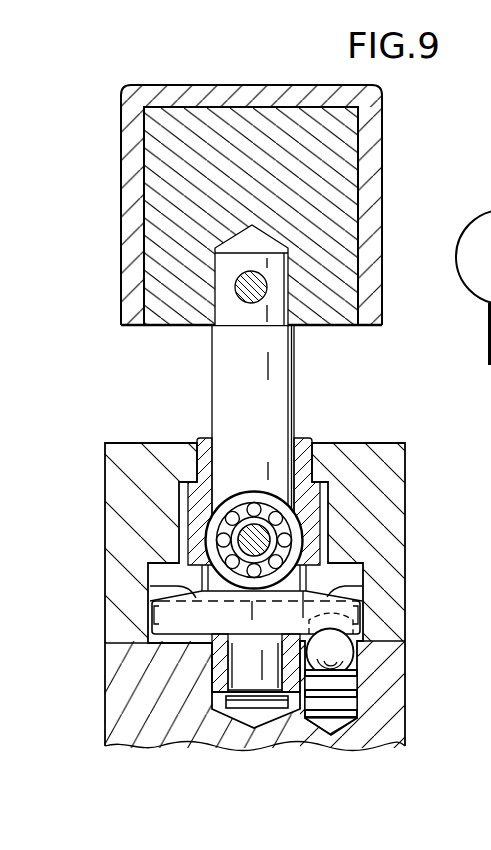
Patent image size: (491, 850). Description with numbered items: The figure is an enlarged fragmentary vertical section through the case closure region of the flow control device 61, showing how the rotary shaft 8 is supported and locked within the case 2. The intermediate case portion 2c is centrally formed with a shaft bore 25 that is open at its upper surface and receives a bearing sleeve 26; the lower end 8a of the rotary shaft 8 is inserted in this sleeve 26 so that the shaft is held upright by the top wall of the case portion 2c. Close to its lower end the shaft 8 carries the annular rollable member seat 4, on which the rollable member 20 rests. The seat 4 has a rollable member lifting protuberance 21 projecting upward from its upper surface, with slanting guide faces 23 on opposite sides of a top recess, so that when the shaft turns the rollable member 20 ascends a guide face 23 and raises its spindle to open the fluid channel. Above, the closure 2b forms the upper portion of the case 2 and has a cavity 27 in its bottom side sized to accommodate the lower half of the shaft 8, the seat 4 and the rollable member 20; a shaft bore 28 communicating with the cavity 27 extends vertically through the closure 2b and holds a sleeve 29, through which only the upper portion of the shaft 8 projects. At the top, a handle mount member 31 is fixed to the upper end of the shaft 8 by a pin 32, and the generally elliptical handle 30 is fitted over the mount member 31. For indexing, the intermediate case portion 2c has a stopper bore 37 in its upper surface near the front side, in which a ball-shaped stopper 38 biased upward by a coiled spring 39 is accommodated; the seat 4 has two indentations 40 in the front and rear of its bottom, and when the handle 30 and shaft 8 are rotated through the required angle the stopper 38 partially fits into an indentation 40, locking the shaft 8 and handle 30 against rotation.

The case 2 is at (105, 500).
The closure 2b is at (392, 472).
The intermediate case portion 2c is at (393, 727).
The rollable member seat 4 is at (153, 617).
The rotary shaft 8 is at (277, 367).
The lower end of rotary shaft 8a is at (215, 703).
The rollable member 20 is at (243, 491).
The rollable member lifting protuberance 21 is at (222, 645).
The slanting guide face 23 is at (150, 595).
The shaft bore 25 is at (268, 716).
The bearing sleeve 26 is at (236, 674).
The cavity 27 is at (150, 573).
The shaft bore 28 is at (203, 443).
The sleeve 29 is at (303, 442).
The handle 30 is at (368, 105).
The handle mount member 31 is at (270, 120).
The pin 32 is at (245, 295).
The stopper bore 37 is at (340, 723).
The stopper 38 is at (354, 657).
The coiled spring 39 is at (354, 690).
The indentation 40 is at (367, 622).
The flow control device 61 is at (95, 450).